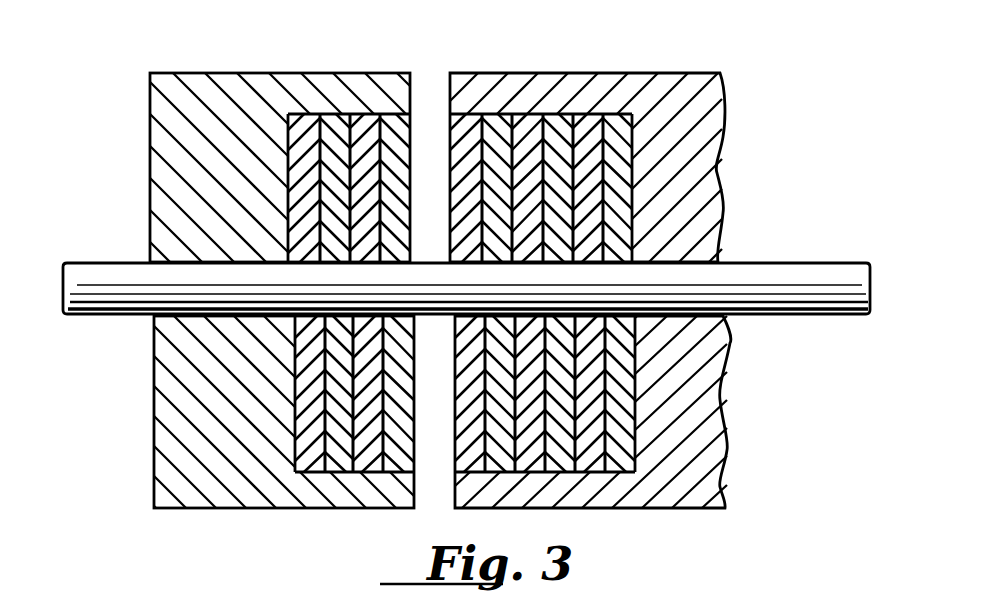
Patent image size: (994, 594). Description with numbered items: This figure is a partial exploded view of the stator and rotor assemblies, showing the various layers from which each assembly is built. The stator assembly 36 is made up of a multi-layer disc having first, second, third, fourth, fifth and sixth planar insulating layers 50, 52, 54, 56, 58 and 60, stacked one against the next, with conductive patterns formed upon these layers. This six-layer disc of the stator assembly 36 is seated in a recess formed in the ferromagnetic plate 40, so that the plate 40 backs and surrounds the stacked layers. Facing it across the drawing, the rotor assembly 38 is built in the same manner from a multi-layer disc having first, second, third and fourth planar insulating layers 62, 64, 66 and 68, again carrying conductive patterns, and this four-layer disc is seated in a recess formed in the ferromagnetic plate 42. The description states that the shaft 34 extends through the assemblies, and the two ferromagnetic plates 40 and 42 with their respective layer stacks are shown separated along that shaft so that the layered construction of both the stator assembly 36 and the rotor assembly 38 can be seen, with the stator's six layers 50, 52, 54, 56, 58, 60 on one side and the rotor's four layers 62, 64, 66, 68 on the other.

The shaft 34 is at (768, 278).
The stator assembly 36 is at (725, 405).
The rotor assembly 38 is at (149, 142).
The ferromagnetic plate 40 is at (690, 190).
The ferromagnetic plate 42 is at (212, 375).
The first planar insulating layer 50 is at (465, 138).
The second planar insulating layer 52 is at (505, 135).
The third planar insulating layer 54 is at (627, 142).
The fourth planar insulating layer 56 is at (617, 168).
The fifth planar insulating layer 58 is at (535, 122).
The sixth planar insulating layer 60 is at (570, 135).
The first planar insulating layer 62 is at (410, 113).
The second planar insulating layer 64 is at (365, 132).
The third planar insulating layer 66 is at (347, 135).
The fourth planar insulating layer 68 is at (300, 152).